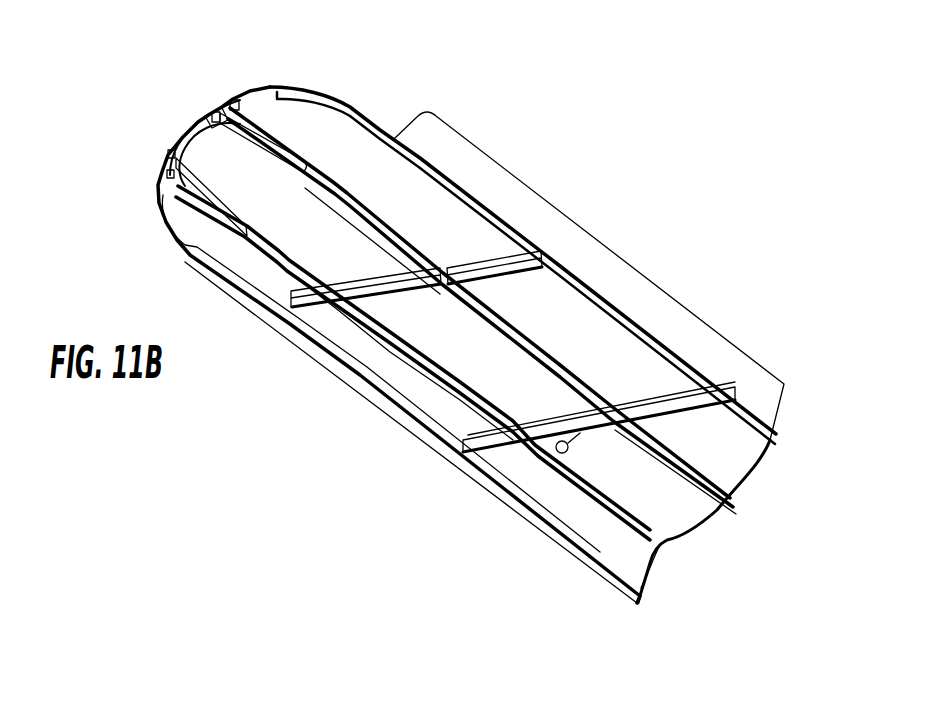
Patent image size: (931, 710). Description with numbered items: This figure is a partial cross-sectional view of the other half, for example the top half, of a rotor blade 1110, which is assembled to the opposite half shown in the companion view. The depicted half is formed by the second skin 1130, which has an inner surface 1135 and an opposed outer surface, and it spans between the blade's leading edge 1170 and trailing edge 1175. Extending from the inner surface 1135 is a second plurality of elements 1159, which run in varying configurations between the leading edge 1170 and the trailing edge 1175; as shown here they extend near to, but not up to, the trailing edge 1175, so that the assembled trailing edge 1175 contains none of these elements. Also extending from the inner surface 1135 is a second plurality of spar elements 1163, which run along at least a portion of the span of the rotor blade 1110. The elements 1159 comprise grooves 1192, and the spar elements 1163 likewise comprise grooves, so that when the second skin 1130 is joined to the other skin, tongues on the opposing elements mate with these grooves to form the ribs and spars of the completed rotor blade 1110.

The rotor blade 1110 is at (148, 119).
The second skin 1130 is at (240, 92).
The inner surface 1135 is at (509, 376).
The second plurality of elements 1159 is at (463, 446).
The second plurality of spar elements 1163 is at (620, 570).
The leading edge 1170 is at (238, 290).
The trailing edge 1175 is at (603, 244).
The grooves 1192 is at (497, 266).